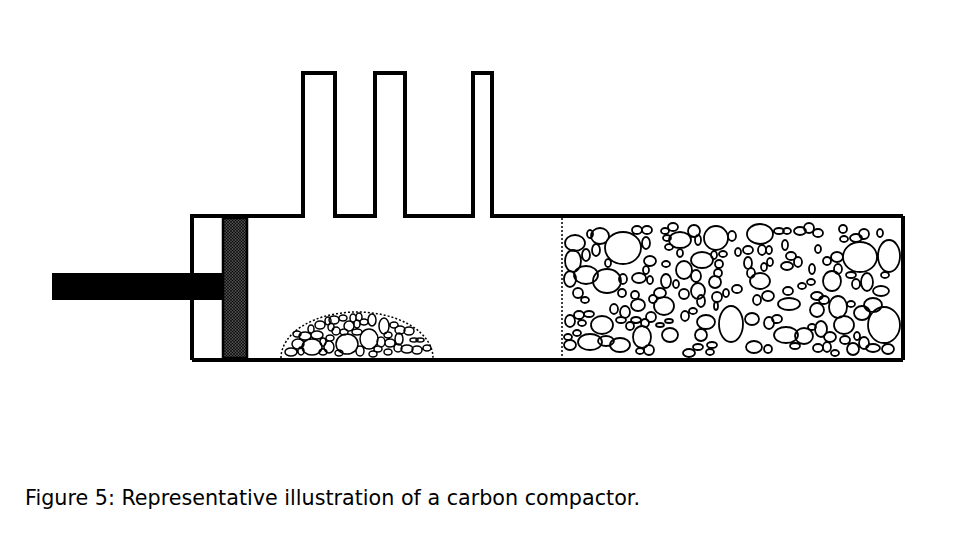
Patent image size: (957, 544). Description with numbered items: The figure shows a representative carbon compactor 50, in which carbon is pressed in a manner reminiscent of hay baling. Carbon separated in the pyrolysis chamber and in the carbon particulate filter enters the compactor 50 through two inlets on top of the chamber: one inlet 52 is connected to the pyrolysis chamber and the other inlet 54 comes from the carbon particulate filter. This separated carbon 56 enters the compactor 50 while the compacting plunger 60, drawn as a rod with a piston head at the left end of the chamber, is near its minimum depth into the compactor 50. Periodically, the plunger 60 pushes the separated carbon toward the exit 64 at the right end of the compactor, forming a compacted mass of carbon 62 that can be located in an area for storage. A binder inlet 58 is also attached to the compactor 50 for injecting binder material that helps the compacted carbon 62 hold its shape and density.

The carbon compactor 50 is at (547, 324).
The inlet 52 is at (351, 114).
The inlet 54 is at (386, 130).
The separated carbon 56 is at (385, 318).
The binder inlet 58 is at (527, 145).
The compacting plunger 60 is at (149, 284).
The compacted mass of carbon 62 is at (730, 243).
The exit 64 is at (879, 319).